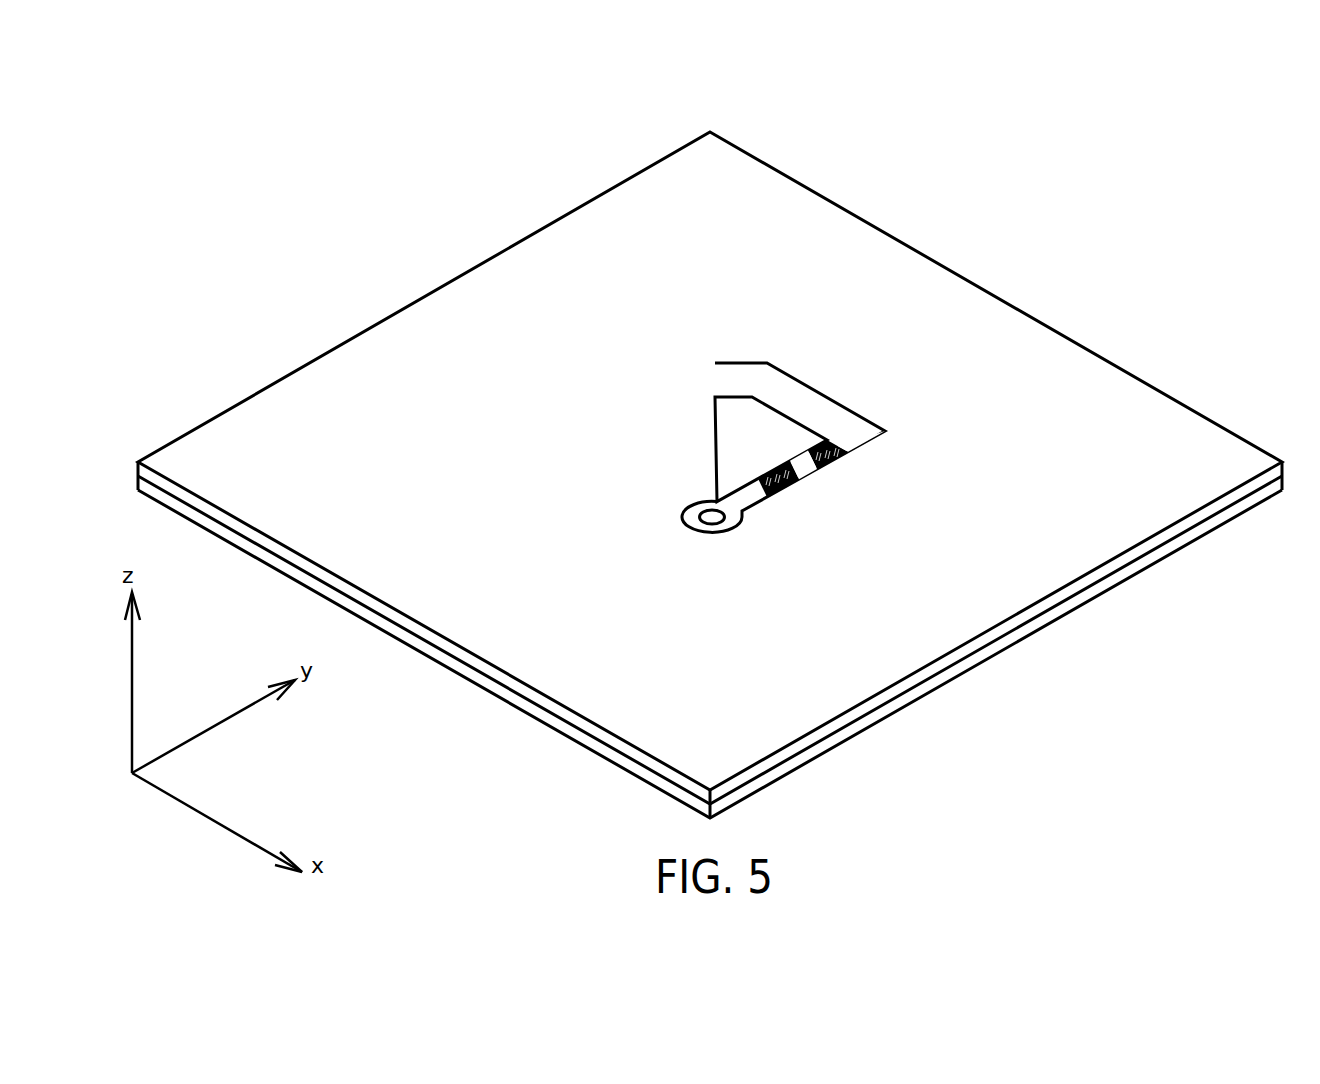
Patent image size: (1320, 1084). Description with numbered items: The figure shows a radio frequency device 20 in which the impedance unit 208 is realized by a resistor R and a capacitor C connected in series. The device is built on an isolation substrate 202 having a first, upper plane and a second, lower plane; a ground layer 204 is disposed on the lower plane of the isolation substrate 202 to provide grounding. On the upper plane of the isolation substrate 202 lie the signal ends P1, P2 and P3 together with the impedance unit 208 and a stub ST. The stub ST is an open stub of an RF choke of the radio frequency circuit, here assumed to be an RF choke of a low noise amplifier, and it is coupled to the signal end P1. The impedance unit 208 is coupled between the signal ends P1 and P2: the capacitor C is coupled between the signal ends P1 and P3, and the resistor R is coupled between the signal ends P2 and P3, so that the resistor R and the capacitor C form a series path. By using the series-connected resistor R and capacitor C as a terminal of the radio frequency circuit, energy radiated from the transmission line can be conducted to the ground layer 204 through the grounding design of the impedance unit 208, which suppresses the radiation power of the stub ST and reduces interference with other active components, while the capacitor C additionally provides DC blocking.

The radio frequency device 20 is at (715, 488).
The isolation substrate 202 is at (1113, 393).
The ground layer 204 is at (1172, 543).
The stub ST is at (866, 381).
The signal end P1 is at (981, 550).
The signal end P2 is at (810, 629).
The signal end P3 is at (914, 583).
The resistor R is at (880, 627).
The capacitor C is at (947, 616).
The impedance unit 208 is at (1097, 778).